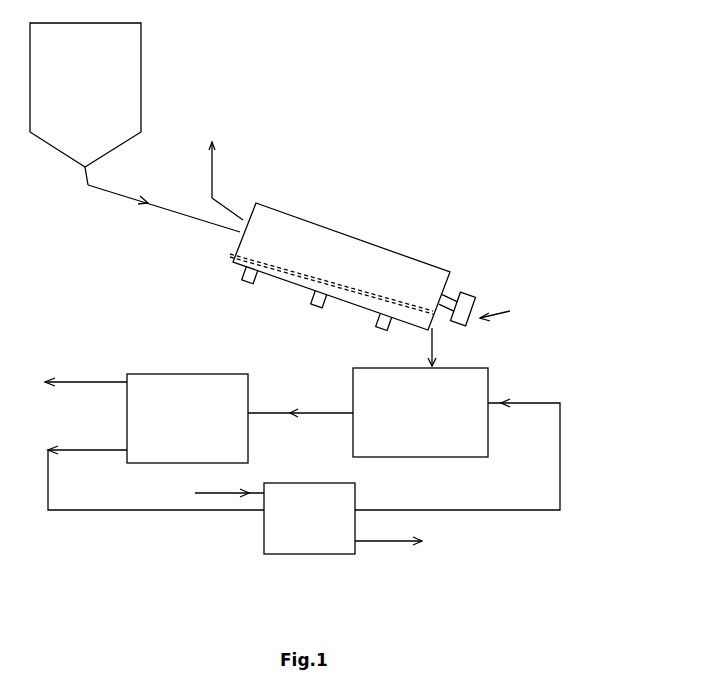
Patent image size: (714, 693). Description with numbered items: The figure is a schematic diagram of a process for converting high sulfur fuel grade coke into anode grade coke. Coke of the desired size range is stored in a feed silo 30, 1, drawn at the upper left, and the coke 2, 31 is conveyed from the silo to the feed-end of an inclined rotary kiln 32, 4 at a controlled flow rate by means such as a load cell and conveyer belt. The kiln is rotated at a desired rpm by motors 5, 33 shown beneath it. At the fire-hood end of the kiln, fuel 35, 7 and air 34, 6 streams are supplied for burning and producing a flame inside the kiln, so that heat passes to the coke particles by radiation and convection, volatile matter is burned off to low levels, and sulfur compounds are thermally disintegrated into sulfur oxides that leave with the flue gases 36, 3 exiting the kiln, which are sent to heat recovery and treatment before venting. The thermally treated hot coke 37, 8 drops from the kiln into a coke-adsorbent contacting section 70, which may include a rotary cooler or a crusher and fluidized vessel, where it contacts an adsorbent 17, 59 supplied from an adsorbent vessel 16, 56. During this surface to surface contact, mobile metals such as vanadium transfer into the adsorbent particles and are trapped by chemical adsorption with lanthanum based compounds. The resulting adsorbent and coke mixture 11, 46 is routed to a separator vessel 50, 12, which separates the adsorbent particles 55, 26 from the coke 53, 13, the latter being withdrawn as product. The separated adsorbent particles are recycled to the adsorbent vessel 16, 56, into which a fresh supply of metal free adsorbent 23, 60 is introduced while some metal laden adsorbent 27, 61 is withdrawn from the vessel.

The feed silo 30 is at (110, 104).
The feed silo 1 is at (141, 70).
The coke 2 is at (164, 207).
The coke 31 is at (187, 212).
The flue gases 36 is at (234, 181).
The flue gases 3 is at (212, 180).
The rotary kiln 32 is at (340, 265).
The rotary kiln 4 is at (315, 225).
The motors 5 is at (303, 299).
The motors 33 is at (250, 285).
The air 34 is at (485, 296).
The air 6 is at (472, 292).
The fuel 35 is at (516, 312).
The fuel 7 is at (516, 312).
The thermally treated hot coke 37 is at (458, 347).
The thermally treated hot coke 8 is at (432, 340).
The coke-adsorbent contacting section 70 is at (410, 457).
The separator vessel 50 is at (187, 408).
The separator vessel 12 is at (160, 373).
The coke 53 is at (86, 371).
The coke 13 is at (65, 378).
The adsorbent and coke mixture 11 is at (300, 401).
The adsorbent and coke mixture 46 is at (265, 417).
The adsorbent 17 is at (471, 443).
The adsorbent 59 is at (524, 403).
The adsorbent particles 55 is at (156, 468).
The adsorbent particles 26 is at (63, 450).
The metal free adsorbent 23 is at (229, 485).
The metal free adsorbent 60 is at (222, 493).
The adsorbent vessel 16 is at (312, 532).
The adsorbent vessel 56 is at (295, 554).
The metal laden adsorbent 27 is at (388, 533).
The metal laden adsorbent 61 is at (383, 541).